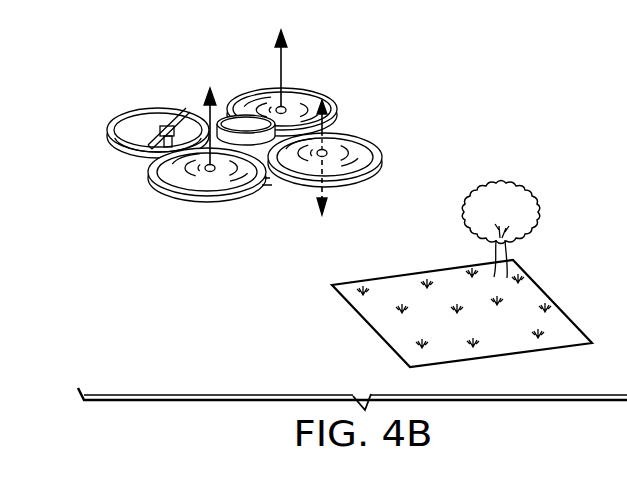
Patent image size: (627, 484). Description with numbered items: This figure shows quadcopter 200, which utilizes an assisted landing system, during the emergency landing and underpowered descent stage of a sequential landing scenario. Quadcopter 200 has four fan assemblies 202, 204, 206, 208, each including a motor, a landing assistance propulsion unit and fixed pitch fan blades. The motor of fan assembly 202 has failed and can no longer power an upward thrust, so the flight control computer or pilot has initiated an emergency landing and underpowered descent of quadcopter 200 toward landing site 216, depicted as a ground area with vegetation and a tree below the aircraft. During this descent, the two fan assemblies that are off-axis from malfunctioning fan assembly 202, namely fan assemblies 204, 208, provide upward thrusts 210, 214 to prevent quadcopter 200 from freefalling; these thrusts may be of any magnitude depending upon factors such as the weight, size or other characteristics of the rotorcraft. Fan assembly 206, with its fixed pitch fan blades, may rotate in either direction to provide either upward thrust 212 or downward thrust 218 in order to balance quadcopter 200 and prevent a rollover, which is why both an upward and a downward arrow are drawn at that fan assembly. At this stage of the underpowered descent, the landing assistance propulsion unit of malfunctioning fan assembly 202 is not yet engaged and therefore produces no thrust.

The quadcopter 200 is at (254, 142).
The fan assembly 202 is at (121, 112).
The fan assembly 204 is at (173, 195).
The fan assembly 206 is at (367, 180).
The fan assembly 208 is at (338, 112).
The upward thrust 210 is at (196, 108).
The upward thrust 212 is at (343, 142).
The upward thrust 214 is at (285, 65).
The landing site 216 is at (345, 282).
The downward thrust 218 is at (318, 166).